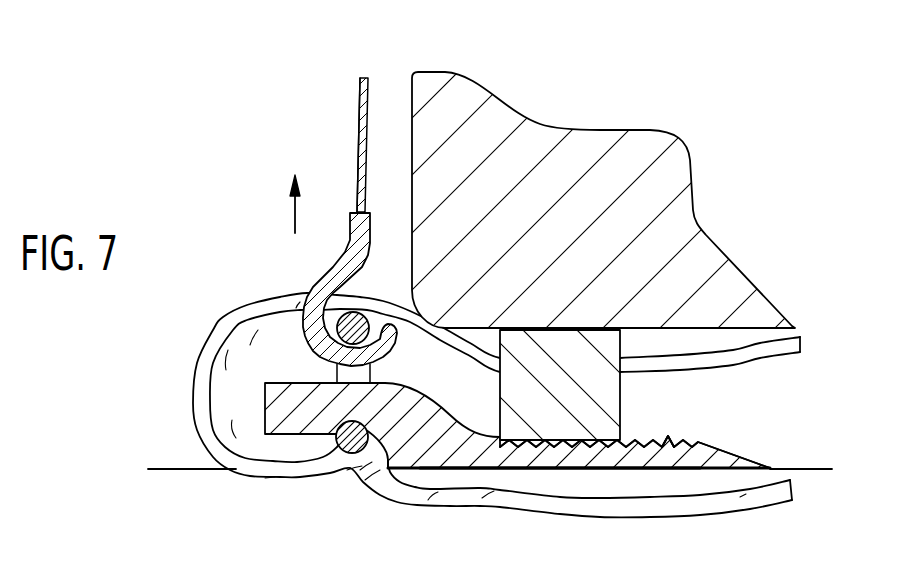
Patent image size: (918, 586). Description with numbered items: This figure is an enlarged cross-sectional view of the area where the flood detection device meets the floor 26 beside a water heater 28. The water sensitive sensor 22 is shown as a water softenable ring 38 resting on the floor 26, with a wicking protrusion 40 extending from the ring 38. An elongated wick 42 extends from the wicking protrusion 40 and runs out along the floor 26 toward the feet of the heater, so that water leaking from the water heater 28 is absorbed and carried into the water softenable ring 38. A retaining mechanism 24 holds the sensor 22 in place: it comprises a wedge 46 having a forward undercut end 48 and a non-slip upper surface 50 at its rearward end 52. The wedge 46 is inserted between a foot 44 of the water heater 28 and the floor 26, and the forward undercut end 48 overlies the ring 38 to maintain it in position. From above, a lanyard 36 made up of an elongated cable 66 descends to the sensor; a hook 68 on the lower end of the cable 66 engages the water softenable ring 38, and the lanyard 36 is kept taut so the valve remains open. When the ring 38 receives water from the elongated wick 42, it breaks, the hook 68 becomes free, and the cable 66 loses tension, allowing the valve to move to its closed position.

The water sensitive sensor 22 is at (198, 357).
The retaining mechanism 24 is at (737, 448).
The floor 26 is at (165, 469).
The water heater 28 is at (712, 262).
The lanyard 36 is at (361, 97).
The water softenable ring 38 is at (337, 370).
The wicking protrusion 40 is at (350, 472).
The elongated wick 42 is at (607, 516).
The foot 44 is at (610, 393).
The wedge 46 is at (557, 470).
The forward undercut end 48 is at (265, 403).
The non-slip upper surface 50 is at (665, 440).
The rearward end 52 is at (742, 482).
The elongated cable 66 is at (358, 125).
The hook 68 is at (345, 263).